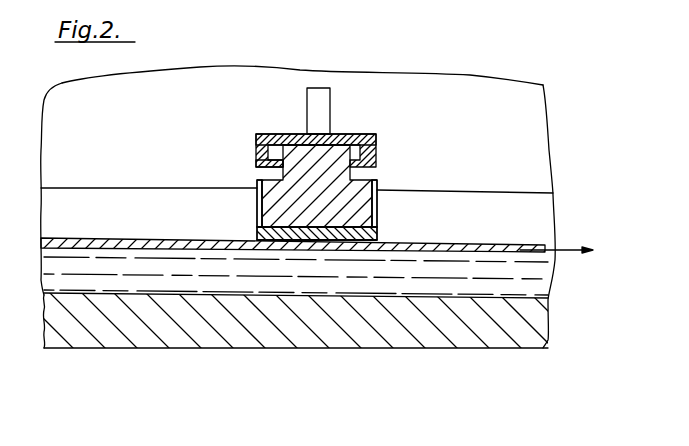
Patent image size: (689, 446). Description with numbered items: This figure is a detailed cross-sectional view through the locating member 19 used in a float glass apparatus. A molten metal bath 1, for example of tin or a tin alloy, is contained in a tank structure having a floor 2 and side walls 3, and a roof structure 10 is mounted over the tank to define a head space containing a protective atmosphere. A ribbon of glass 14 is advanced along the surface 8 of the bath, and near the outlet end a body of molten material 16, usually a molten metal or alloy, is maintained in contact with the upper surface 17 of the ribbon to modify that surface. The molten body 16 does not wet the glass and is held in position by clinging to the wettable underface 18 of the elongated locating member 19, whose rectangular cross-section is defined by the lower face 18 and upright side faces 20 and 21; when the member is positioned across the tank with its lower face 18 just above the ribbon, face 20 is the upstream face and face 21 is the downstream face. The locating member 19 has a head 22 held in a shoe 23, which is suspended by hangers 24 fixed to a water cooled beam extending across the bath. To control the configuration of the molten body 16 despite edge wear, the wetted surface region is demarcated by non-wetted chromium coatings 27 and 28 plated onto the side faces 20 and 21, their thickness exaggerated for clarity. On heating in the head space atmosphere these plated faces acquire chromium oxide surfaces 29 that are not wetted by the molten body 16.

The molten metal bath 1 is at (547, 293).
The floor 2 is at (153, 333).
The side walls 3 is at (550, 204).
The surface of the molten metal bath 8 is at (521, 250).
The roof structure 10 is at (535, 132).
The ribbon of glass 14 is at (78, 240).
The body of molten material 16 is at (260, 239).
The upper surface of the ribbon 17 is at (518, 246).
The wettable underface 18 is at (264, 230).
The locating member 19 is at (333, 190).
The upstream upright side face 20 is at (264, 164).
The downstream upright side face 21 is at (368, 217).
The head 22 is at (264, 136).
The shoe 23 is at (352, 138).
The hangers 24 is at (323, 103).
The chromium coating 27 is at (257, 212).
The chromium coating 28 is at (377, 205).
The chromium oxide surfaces 29 is at (258, 186).